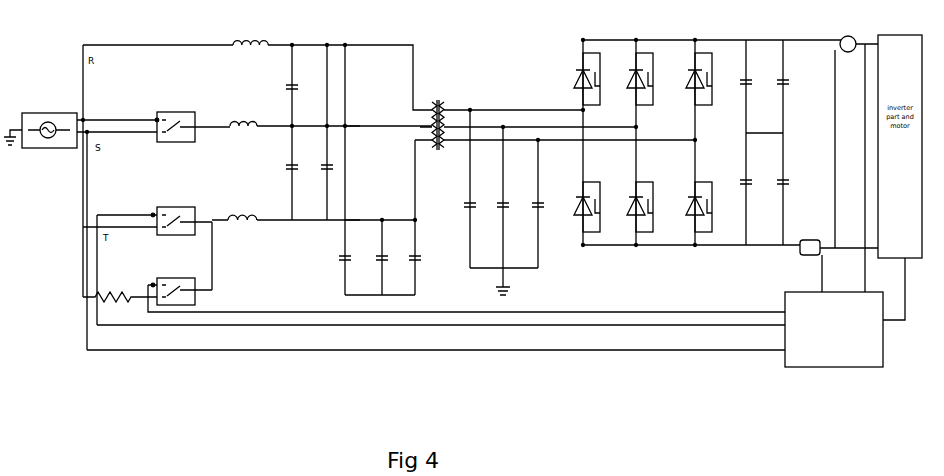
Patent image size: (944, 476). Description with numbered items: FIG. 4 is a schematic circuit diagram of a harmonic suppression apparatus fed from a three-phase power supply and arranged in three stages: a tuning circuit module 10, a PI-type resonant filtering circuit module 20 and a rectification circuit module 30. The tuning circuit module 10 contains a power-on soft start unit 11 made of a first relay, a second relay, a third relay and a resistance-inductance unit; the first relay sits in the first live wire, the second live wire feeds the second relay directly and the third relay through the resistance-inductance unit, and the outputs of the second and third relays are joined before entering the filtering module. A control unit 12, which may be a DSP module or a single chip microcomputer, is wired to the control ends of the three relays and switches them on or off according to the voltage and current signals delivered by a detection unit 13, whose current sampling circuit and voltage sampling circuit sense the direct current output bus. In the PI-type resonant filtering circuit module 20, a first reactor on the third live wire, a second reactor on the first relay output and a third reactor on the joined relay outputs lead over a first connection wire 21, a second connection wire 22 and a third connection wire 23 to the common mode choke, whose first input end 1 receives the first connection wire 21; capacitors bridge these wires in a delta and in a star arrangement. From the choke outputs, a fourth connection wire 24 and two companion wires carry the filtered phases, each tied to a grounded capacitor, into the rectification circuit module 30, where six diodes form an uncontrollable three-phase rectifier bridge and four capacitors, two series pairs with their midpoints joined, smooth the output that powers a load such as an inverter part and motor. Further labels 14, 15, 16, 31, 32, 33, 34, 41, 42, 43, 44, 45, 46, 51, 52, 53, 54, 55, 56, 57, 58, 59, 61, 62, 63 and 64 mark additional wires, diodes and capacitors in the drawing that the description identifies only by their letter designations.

The first input end of the common mode choke 1 is at (80, 139).
The tuning circuit module 10 is at (360, 155).
The power-on soft start unit 11 is at (250, 54).
The control unit 12 is at (834, 329).
The detection unit 13 is at (437, 129).
The first DC line 14 is at (485, 109).
The second DC line 15 is at (523, 127).
The third DC line 16 is at (567, 141).
The PI-type resonant filtering circuit module 20 is at (192, 133).
The first connection wire 21 is at (155, 248).
The second connection wire 22 is at (173, 297).
The third connection wire 23 is at (856, 142).
The fourth connection wire 24 is at (839, 266).
The rectification circuit module 30 is at (357, 125).
The lower line 31 is at (352, 219).
The inductor 32 is at (243, 135).
The inductor 33 is at (242, 229).
The neutral resistor 34 is at (109, 305).
The diode module 41 is at (597, 79).
The diode module 42 is at (653, 79).
The diode module 43 is at (708, 79).
The diode module 44 is at (583, 207).
The diode module 45 is at (634, 207).
The diode module 46 is at (692, 207).
The capacitor 51 is at (299, 89).
The capacitor 52 is at (299, 170).
The capacitor 53 is at (331, 170).
The capacitor 54 is at (352, 260).
The capacitor 55 is at (388, 260).
The capacitor 56 is at (422, 260).
The capacitor 57 is at (477, 208).
The capacitor 58 is at (510, 208).
The capacitor 59 is at (544, 208).
The capacitor 61 is at (737, 83).
The capacitor 62 is at (773, 83).
The capacitor 63 is at (736, 184).
The capacitor 64 is at (773, 184).